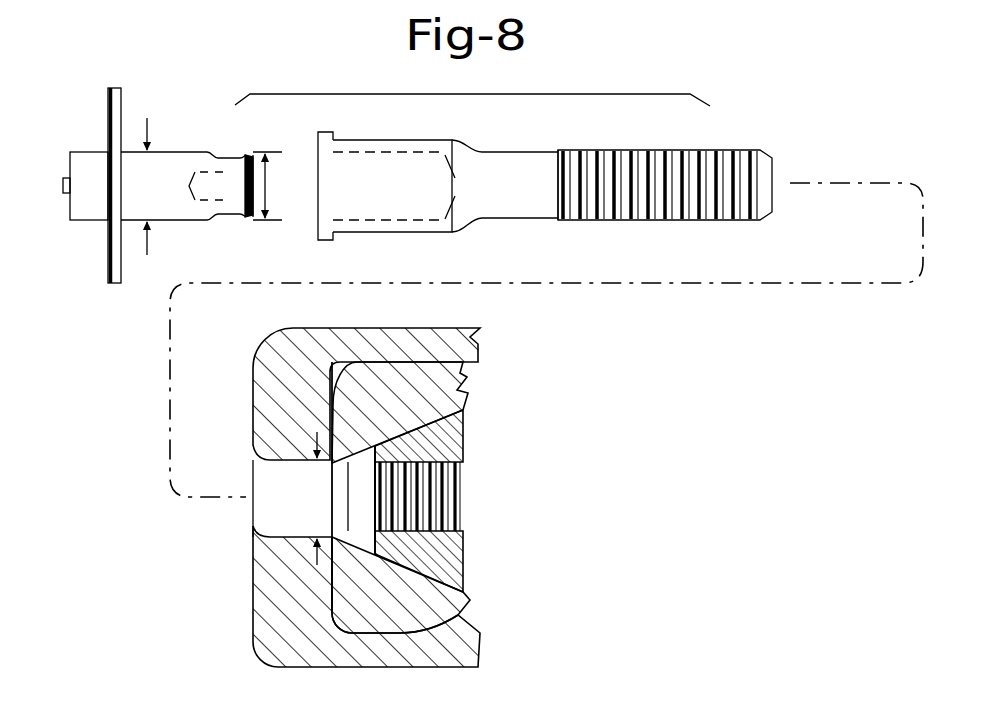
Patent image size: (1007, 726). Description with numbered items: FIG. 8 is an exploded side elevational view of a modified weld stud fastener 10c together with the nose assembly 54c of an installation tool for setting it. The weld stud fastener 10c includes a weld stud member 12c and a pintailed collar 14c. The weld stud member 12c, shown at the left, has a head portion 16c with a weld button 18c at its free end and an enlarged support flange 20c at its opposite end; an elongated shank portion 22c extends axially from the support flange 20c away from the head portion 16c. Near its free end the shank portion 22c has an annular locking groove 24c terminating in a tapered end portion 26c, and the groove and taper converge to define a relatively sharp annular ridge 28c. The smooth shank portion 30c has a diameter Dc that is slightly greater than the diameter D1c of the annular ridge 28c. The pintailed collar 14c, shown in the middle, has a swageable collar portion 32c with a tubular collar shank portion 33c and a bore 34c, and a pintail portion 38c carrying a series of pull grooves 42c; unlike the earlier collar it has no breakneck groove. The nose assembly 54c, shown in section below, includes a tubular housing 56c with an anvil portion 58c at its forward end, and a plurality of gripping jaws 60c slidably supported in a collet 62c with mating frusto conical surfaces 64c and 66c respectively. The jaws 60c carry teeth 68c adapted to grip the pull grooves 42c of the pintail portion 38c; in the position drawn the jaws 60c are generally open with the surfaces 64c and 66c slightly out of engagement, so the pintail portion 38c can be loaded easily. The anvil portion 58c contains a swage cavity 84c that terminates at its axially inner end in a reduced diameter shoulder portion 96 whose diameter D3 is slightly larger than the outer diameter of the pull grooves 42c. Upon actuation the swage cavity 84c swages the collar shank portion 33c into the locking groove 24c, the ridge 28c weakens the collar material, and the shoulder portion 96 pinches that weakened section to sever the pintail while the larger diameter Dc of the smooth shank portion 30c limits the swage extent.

The weld stud fastener 10c is at (470, 94).
The weld stud member 12c is at (171, 226).
The pintailed collar 14c is at (580, 223).
The head portion 16c is at (92, 157).
The weld button 18c is at (65, 196).
The support flange 20c is at (120, 90).
The shank portion 22c is at (188, 151).
The locking groove 24c is at (229, 219).
The tapered end portion 26c is at (251, 222).
The annular ridge 28c is at (246, 156).
The smooth shank portion 30c is at (132, 205).
The collar portion 32c is at (426, 140).
The collar shank portion 33c is at (375, 232).
The sleeve bore 34c is at (340, 139).
The pintail portion 38c is at (496, 152).
The pull grooves 42c is at (600, 150).
The nose assembly 54c is at (366, 641).
The tubular housing 56c is at (444, 321).
The anvil portion 58c is at (456, 398).
The gripping jaws 60c is at (464, 436).
The collet 62c is at (456, 638).
The frusto conical surface 64c is at (340, 404).
The frusto conical surface 66c is at (430, 545).
The teeth 68c is at (460, 478).
The swage cavity 84c is at (290, 537).
The shoulder portion 96 is at (466, 500).
The diameter of smooth shank portion Dc is at (146, 172).
The diameter of annular ridge D1c is at (266, 169).
The diameter of shoulder portion D3 is at (314, 498).